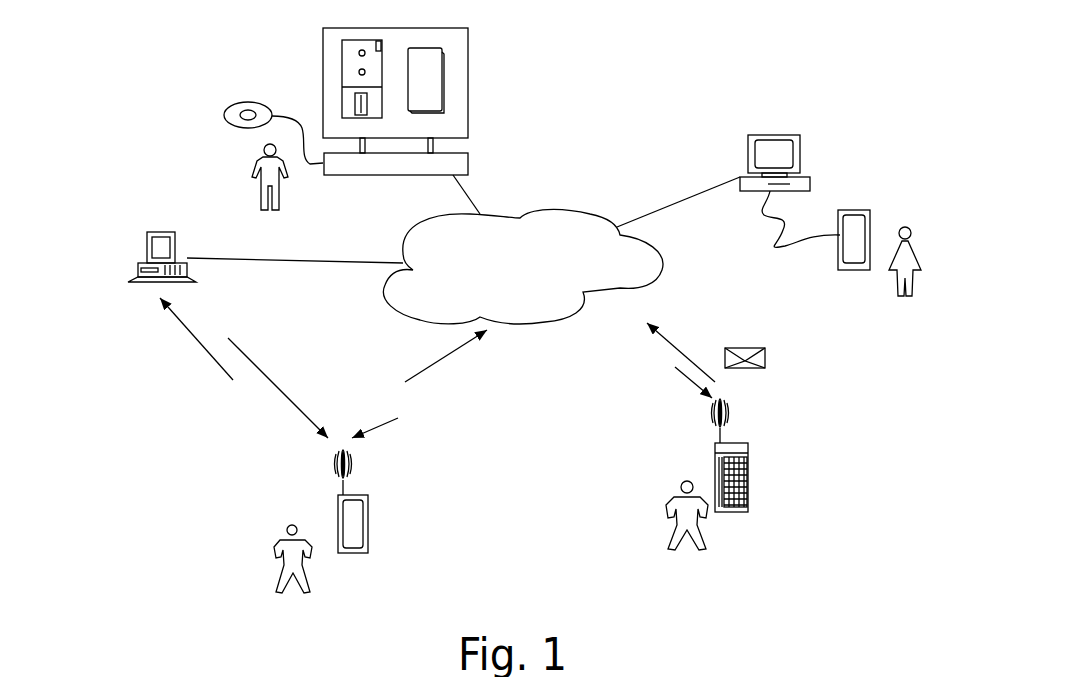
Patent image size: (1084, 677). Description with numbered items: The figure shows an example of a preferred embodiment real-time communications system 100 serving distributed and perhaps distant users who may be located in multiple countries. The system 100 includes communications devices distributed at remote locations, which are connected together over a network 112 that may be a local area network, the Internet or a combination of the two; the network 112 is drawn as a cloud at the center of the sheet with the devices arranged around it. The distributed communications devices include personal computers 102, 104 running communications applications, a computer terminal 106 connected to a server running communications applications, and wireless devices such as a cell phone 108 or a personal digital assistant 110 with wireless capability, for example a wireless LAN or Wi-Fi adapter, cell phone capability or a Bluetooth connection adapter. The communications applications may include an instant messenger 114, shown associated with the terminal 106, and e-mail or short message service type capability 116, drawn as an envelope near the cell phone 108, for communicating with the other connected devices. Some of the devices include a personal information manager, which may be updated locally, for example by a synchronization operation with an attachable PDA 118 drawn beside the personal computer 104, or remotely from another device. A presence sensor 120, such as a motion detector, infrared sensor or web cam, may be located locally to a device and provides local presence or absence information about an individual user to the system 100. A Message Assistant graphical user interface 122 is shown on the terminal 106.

The real-time communications system 100 is at (543, 583).
The personal computer 102 is at (147, 245).
The personal computer 104 is at (750, 148).
The computer terminal 106 is at (467, 28).
The cell phone 108 is at (748, 473).
The personal digital assistant (PDA) 110 is at (368, 522).
The network 112 is at (540, 211).
The instant messenger 114 is at (342, 72).
The e-mail or short message service (SMS) type capability 116 is at (765, 353).
The attachable PDA 118 is at (870, 220).
The presence sensor 120 is at (227, 112).
The Message Assistant graphical user interface (GUI) 122 is at (443, 73).